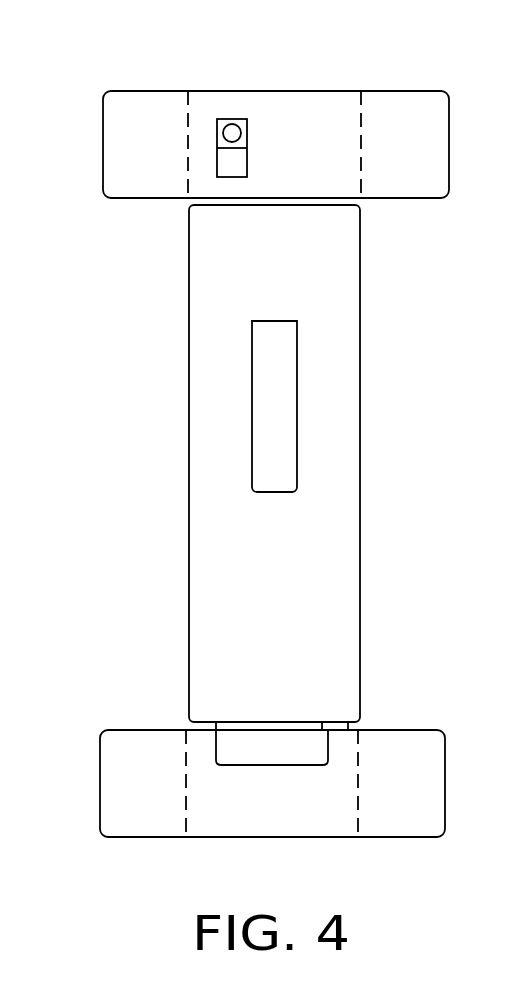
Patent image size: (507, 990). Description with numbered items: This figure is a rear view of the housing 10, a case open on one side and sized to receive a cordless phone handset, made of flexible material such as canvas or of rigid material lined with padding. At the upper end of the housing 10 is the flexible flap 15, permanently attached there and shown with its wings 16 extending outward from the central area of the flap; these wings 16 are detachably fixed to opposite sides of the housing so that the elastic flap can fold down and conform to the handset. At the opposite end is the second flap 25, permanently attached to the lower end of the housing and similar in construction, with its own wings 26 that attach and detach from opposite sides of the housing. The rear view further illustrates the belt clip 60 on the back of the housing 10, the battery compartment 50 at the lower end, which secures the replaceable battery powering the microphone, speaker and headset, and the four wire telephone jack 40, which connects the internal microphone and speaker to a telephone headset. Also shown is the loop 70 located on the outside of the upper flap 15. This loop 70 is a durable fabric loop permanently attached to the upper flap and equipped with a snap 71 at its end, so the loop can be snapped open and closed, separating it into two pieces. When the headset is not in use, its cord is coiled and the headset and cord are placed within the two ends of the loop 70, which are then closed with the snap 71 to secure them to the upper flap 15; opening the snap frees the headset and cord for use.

The housing 10 is at (345, 418).
The flexible flap 15 is at (322, 168).
The wings 16 is at (133, 167).
The second flap 25 is at (227, 827).
The wings 26 is at (127, 768).
The telephone jack 40 is at (343, 722).
The battery compartment 50 is at (307, 757).
The belt clip 60 is at (260, 385).
The loop 70 is at (218, 162).
The snap 71 is at (231, 124).